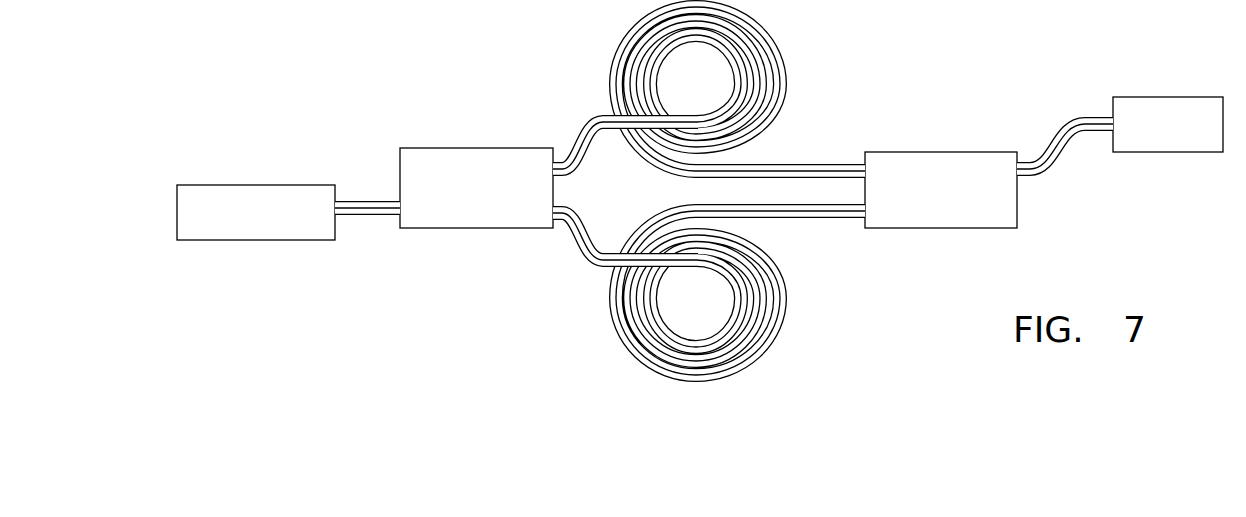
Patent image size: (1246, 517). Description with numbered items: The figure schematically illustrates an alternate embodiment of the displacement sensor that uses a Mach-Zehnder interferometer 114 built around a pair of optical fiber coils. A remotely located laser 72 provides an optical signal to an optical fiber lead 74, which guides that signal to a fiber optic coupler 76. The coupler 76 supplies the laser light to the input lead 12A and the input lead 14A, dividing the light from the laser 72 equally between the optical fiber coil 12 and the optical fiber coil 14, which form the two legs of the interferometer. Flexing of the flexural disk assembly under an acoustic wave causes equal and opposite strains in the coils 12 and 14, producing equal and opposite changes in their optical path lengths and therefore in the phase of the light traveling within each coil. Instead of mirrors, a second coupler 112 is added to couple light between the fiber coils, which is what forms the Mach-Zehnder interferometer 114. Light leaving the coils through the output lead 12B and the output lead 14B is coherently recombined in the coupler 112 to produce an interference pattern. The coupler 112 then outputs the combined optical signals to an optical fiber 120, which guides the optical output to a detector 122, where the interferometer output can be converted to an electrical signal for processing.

The optical fiber coil 12 is at (773, 44).
The input lead 12A is at (830, 162).
The output lead 12B is at (574, 153).
The optical fiber coil 14 is at (773, 337).
The input lead 14A is at (807, 222).
The output lead 14B is at (575, 228).
The laser 72 is at (1139, 153).
The optical fiber lead 74 is at (1101, 112).
The fiber optic coupler 76 is at (937, 229).
The second coupler 112 is at (455, 147).
The Mach-Zehnder interferometer 114 is at (450, 319).
The optical fiber 120 is at (371, 200).
The detector 122 is at (264, 243).